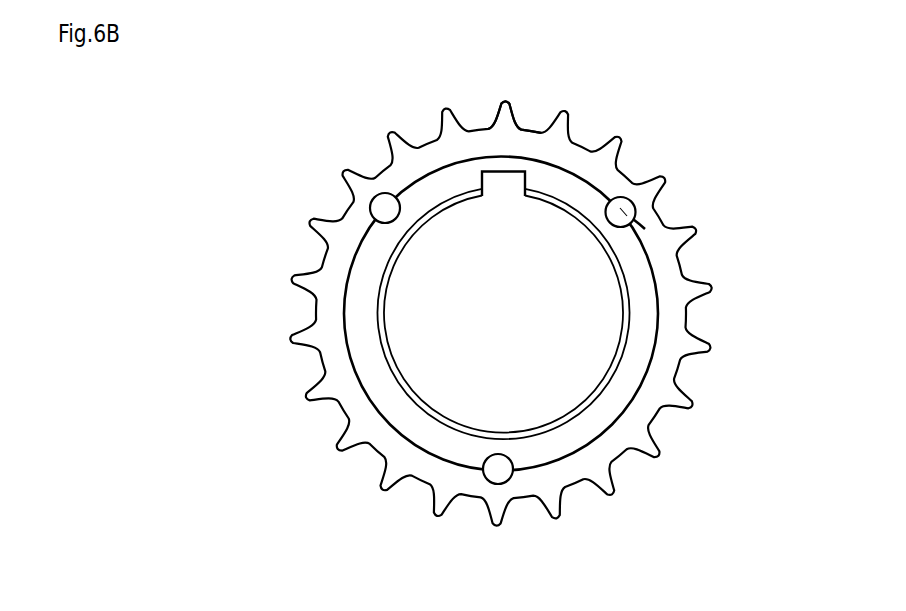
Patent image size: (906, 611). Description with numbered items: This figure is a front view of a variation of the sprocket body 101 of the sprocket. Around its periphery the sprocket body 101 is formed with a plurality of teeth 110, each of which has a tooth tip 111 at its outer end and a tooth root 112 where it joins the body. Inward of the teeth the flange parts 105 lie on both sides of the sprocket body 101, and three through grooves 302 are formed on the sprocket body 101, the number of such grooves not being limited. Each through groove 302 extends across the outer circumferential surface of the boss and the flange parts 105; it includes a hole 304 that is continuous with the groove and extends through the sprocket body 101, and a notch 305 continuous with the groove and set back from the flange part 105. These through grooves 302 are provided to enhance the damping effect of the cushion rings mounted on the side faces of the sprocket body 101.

The sprocket body 101 is at (317, 217).
The flange part 105 is at (412, 193).
The teeth 110 is at (493, 35).
The tooth tip 111 is at (503, 99).
The tooth root 112 is at (532, 127).
The through groove 302 is at (387, 206).
The hole 304 is at (639, 222).
The notch 305 is at (620, 208).